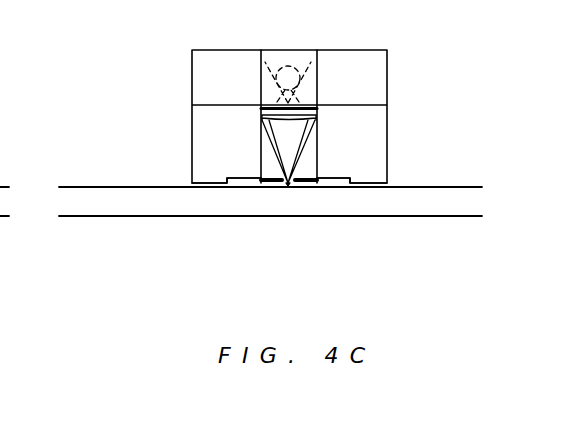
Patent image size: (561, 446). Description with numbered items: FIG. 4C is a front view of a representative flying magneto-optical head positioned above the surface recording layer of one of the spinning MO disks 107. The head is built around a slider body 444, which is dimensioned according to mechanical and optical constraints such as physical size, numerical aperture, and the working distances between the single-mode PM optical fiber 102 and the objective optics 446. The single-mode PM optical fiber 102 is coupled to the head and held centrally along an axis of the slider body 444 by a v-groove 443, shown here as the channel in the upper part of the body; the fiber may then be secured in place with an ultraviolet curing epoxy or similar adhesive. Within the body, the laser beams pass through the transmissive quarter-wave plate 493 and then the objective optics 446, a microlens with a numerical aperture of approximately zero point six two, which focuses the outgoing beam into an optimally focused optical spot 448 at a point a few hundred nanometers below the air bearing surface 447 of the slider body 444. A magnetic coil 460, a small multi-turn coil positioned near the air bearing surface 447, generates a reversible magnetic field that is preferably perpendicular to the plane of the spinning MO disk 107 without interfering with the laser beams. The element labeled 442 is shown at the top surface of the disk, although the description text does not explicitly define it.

The slider body 444 is at (207, 50).
The single-mode PM optical fiber 102 is at (287, 65).
The v-groove 443 is at (315, 73).
The transmissive quarter-wave plate 493 is at (262, 108).
The objective optics 446 is at (261, 131).
The magnetic coil 460 is at (228, 177).
The substrate surface 442 is at (432, 186).
The air bearing surface 447 is at (212, 188).
The optical spot 448 is at (289, 189).
The spinning MO disk 107 is at (417, 203).